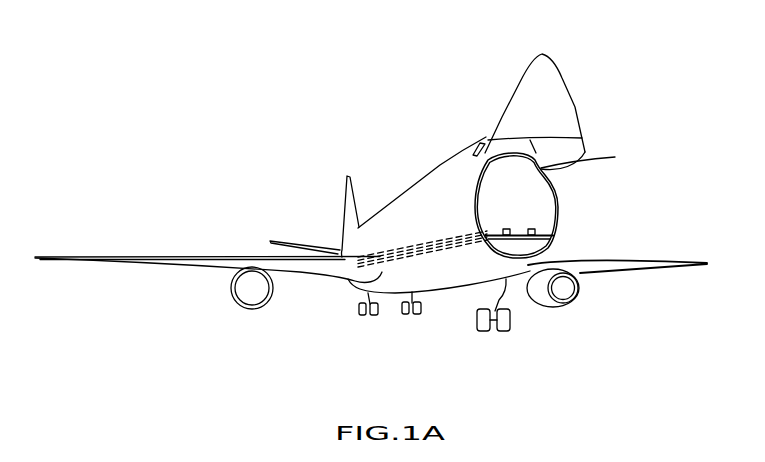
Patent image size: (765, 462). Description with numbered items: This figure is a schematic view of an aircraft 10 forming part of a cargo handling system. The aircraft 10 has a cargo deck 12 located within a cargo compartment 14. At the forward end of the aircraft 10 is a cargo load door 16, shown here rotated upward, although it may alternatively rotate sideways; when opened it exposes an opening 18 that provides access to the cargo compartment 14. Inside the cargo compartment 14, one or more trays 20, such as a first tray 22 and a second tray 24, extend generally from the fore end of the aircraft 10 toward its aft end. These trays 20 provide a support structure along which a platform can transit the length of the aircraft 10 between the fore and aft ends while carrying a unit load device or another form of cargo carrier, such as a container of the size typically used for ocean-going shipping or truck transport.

The aircraft 10 is at (360, 86).
The cargo deck 12 is at (557, 237).
The cargo compartment 14 is at (530, 190).
The cargo load door 16 is at (565, 73).
The opening 18 is at (567, 185).
The trays 20 is at (515, 215).
The first tray 22 is at (537, 223).
The second tray 24 is at (490, 236).